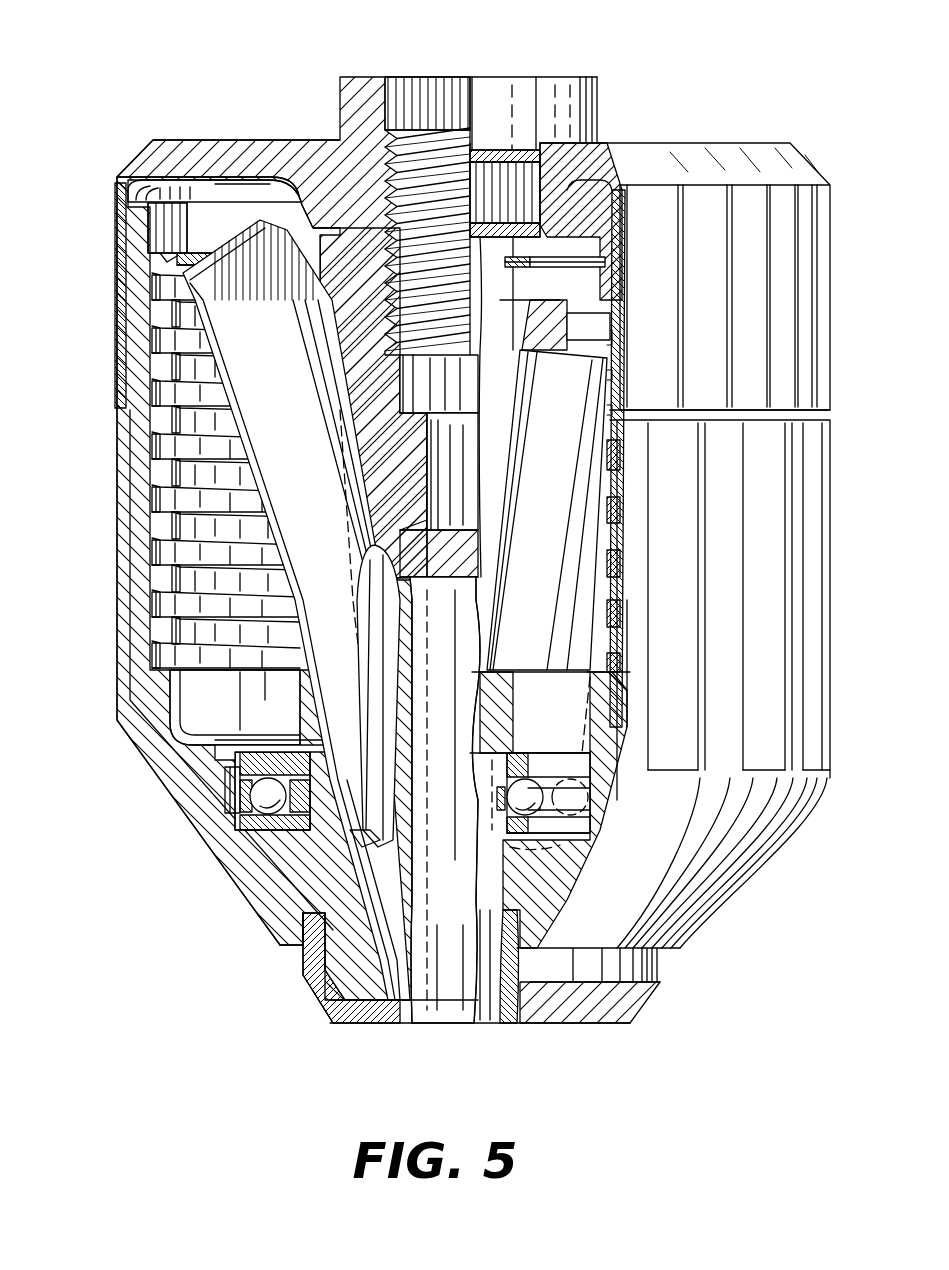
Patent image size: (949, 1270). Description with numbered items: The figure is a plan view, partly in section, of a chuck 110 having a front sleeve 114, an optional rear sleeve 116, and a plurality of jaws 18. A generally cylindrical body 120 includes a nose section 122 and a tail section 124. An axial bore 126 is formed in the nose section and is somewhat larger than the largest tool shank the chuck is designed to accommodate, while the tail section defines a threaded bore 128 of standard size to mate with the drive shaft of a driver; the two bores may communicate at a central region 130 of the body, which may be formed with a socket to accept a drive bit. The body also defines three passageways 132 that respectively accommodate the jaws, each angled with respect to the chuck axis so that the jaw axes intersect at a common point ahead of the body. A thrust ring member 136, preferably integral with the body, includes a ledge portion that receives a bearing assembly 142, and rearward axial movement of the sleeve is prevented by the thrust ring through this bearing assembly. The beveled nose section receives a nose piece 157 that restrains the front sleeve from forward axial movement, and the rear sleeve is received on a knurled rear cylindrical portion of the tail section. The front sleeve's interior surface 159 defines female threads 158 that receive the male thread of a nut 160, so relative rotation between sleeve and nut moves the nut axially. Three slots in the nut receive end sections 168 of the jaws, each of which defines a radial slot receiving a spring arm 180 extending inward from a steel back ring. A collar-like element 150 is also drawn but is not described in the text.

The chuck 110 is at (88, 608).
The front sleeve 114 is at (117, 595).
The rear sleeve 116 is at (113, 288).
The jaws 18 is at (257, 497).
The body 120 is at (200, 372).
The nose section 122 is at (318, 858).
The tail section 124 is at (340, 110).
The axial bore 126 is at (430, 992).
The threaded bore 128 is at (425, 137).
The central region 130 is at (463, 470).
The passageways 132 is at (368, 880).
The thrust ring member 136 is at (290, 685).
The bearing assembly 142 is at (215, 795).
The collar 150 is at (520, 185).
The nose piece 157 is at (300, 975).
The female threads 158 is at (135, 408).
The interior surface 159 is at (165, 470).
The nut 160 is at (175, 313).
The end sections 168 is at (235, 212).
The spring arms 180 is at (200, 265).